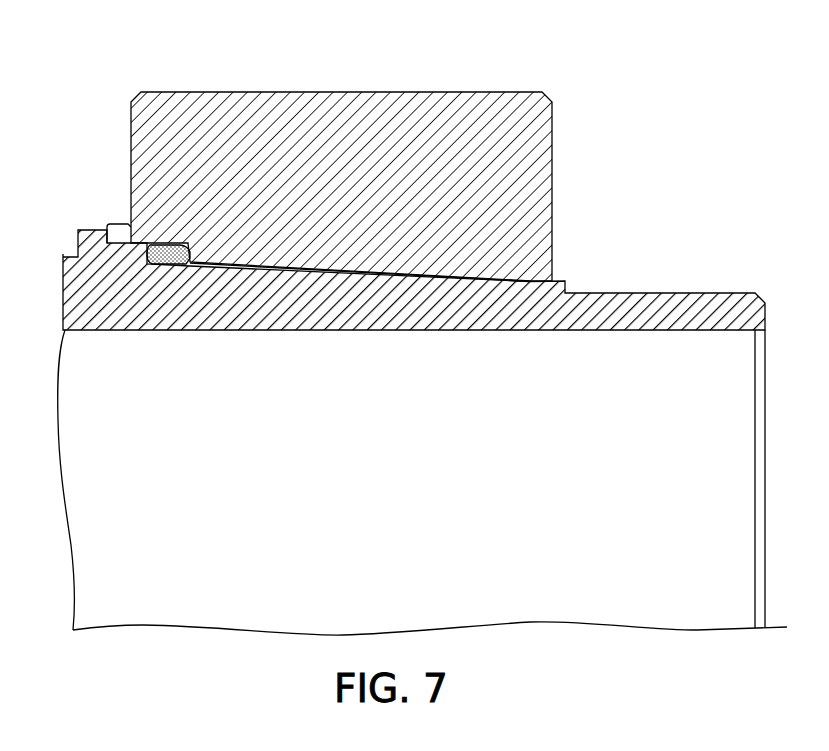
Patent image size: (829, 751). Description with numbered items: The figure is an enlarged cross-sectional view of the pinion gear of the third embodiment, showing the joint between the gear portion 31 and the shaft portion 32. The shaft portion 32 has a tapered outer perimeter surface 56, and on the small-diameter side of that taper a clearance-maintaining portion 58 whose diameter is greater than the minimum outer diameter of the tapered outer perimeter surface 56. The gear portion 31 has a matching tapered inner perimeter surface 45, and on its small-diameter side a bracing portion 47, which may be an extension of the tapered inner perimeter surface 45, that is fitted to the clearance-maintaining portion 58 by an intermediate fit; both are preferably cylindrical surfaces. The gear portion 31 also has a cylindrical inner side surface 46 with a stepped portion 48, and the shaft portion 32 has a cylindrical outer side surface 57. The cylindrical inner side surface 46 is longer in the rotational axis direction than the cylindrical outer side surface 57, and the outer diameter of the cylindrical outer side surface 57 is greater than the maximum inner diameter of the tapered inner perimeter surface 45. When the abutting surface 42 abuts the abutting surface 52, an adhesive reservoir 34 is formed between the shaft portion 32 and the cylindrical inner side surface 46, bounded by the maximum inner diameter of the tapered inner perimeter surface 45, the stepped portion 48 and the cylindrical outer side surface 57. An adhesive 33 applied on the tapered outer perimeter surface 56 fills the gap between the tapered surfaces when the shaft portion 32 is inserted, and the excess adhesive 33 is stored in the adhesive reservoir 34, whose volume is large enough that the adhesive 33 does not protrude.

The gear portion 31 is at (485, 98).
The shaft portion 32 is at (711, 290).
The adhesive 33 is at (161, 241).
The adhesive reservoir 34 is at (165, 258).
The abutting surface 42 is at (103, 236).
The tapered inner perimeter surface 45 is at (324, 284).
The cylindrical inner side surface 46 is at (153, 254).
The bracing portion 47 is at (527, 285).
The stepped portion 48 is at (185, 267).
The abutting surface 52 is at (128, 247).
The tapered outer perimeter surface 56 is at (369, 273).
The cylindrical outer side surface 57 is at (129, 241).
The clearance-maintaining portion 58 is at (557, 279).